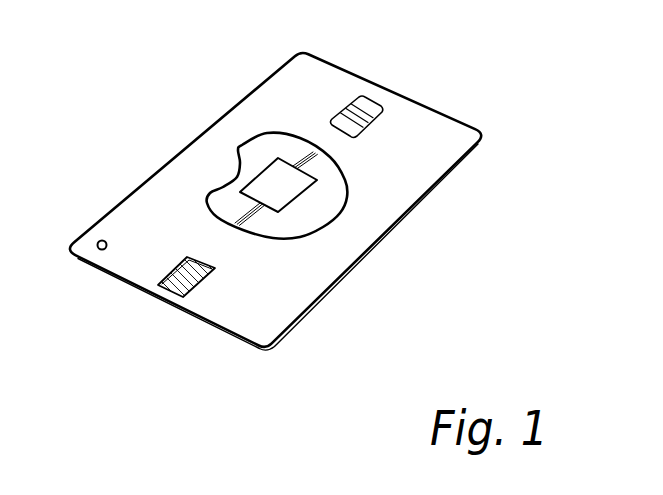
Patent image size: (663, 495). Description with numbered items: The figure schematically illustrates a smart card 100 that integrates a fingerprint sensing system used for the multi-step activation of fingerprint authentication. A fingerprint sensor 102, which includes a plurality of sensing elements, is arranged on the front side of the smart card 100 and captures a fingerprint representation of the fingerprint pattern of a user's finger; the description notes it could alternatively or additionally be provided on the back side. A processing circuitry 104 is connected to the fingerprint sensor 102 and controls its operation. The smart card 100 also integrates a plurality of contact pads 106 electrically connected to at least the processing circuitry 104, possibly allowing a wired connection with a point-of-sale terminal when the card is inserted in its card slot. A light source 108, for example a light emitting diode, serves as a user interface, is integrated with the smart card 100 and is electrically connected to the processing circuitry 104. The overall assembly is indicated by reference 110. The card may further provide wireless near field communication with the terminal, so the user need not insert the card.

The smart card 100 is at (362, 258).
The fingerprint sensor 102 is at (203, 288).
The processing circuitry 104 is at (263, 167).
The contact pads 106 is at (372, 120).
The light source 108 is at (100, 239).
The smart card 110 is at (489, 70).